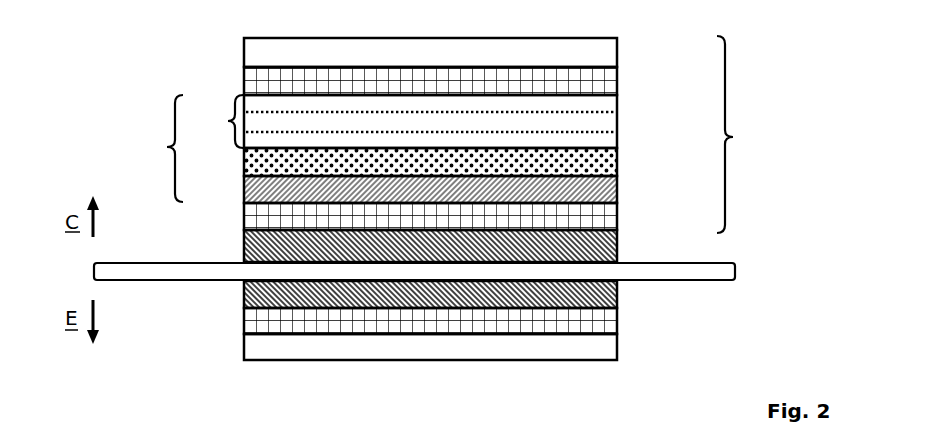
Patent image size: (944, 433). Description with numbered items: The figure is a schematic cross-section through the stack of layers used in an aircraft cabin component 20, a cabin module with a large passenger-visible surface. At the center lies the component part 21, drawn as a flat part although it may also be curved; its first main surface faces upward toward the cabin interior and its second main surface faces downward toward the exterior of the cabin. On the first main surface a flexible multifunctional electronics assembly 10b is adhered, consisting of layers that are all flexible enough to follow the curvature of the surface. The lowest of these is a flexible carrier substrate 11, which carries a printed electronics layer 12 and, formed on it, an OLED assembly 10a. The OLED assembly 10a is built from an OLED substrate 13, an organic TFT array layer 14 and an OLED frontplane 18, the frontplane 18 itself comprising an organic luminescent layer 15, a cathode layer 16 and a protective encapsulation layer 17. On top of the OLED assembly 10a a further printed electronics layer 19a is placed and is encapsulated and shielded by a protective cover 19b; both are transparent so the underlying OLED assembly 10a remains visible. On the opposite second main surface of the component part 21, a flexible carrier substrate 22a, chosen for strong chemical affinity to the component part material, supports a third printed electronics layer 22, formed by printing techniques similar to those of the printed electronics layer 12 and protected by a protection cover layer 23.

The aircraft cabin component 20 is at (113, 68).
The OLED assembly 10a is at (151, 148).
The multifunctional electronics assembly 10b is at (750, 134).
The OLED frontplane 18 is at (216, 121).
The further printed electronics layer 19a is at (244, 70).
The protective cover 19b is at (618, 50).
The protective encapsulation layer 17 is at (618, 96).
The cathode layer 16 is at (618, 115).
The organic luminescent layer 15 is at (618, 137).
The organic TFT array layer 14 is at (618, 167).
The OLED substrate 13 is at (618, 190).
The printed electronics layer 12 is at (618, 223).
The flexible carrier substrate 11 is at (618, 248).
The component part 21 is at (736, 271).
The flexible carrier substrate 22a is at (618, 290).
The third printed electronics layer 22 is at (618, 325).
The protection cover layer 23 is at (244, 346).